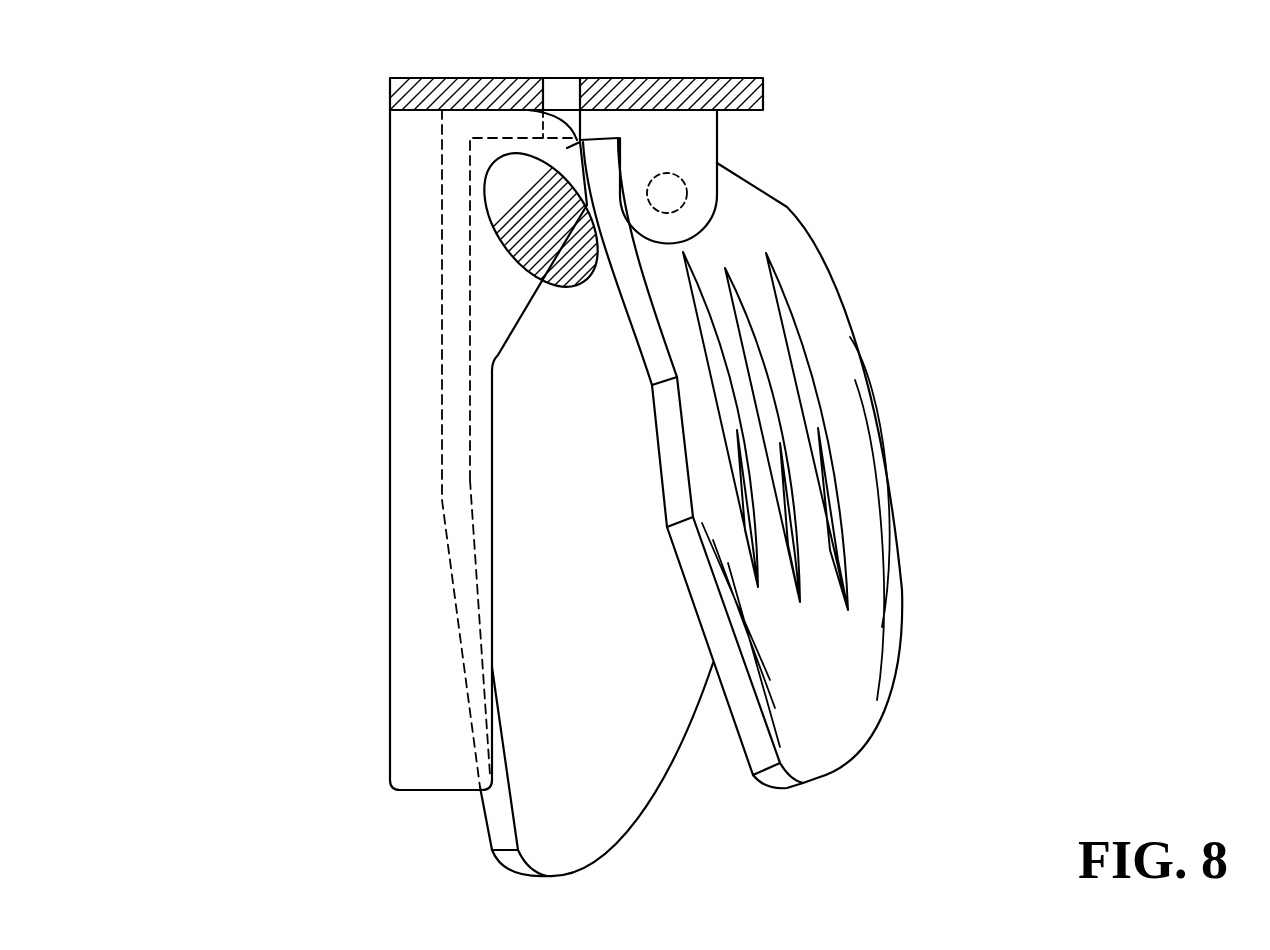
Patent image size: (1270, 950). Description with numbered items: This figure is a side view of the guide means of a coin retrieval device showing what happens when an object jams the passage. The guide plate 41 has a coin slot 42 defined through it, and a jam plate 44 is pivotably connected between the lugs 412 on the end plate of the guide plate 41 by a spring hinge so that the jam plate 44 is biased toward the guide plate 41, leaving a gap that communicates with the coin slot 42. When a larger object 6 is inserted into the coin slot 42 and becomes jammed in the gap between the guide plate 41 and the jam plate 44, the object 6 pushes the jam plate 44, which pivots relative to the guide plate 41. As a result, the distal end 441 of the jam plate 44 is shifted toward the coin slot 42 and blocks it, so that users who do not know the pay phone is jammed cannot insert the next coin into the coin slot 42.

The object 6 is at (503, 208).
The guide plate 41 is at (410, 580).
The coin slot 42 is at (558, 90).
The jam plate 44 is at (828, 673).
The lugs 412 is at (682, 150).
The distal end 441 is at (580, 104).